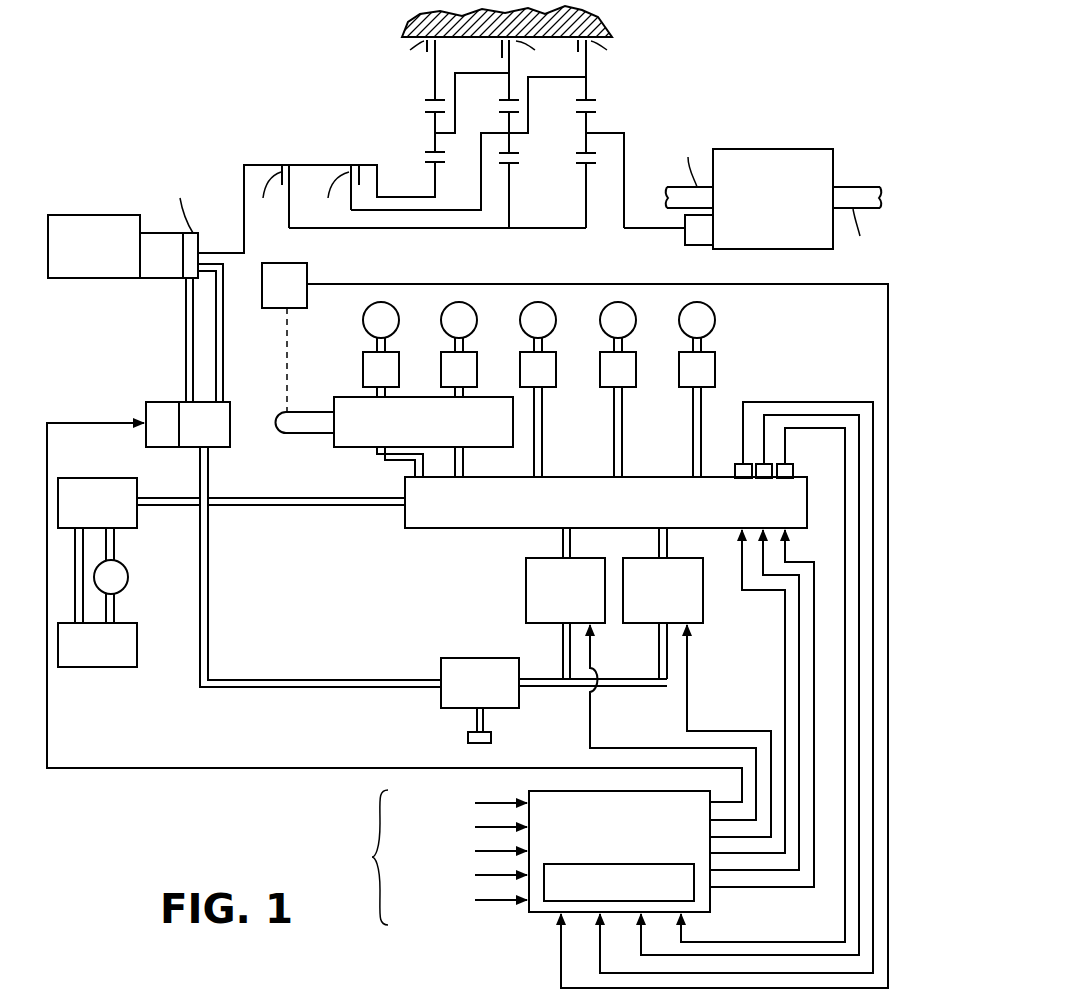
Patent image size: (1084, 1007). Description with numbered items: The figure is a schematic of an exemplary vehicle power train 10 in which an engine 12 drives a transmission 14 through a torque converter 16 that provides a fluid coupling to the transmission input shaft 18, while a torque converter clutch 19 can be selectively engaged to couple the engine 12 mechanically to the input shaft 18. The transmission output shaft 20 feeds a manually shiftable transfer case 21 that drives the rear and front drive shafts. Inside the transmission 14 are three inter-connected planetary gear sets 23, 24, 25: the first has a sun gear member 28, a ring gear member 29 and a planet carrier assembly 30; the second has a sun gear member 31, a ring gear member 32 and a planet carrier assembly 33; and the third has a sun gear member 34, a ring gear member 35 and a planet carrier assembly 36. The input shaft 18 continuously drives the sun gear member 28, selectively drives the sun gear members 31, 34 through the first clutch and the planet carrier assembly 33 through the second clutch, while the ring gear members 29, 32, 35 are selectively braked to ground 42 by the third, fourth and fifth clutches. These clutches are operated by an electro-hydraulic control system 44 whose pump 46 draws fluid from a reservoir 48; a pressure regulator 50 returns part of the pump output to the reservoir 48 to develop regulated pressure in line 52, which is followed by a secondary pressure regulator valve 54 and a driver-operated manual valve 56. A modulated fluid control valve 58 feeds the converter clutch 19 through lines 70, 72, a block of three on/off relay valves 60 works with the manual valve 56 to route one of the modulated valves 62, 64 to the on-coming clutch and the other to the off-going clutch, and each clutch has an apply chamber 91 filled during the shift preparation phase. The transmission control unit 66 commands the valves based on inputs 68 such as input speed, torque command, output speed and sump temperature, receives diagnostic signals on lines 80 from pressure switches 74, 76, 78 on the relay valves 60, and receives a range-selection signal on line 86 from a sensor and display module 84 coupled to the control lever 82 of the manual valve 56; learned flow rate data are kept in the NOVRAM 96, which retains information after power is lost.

The vehicle power train 10 is at (231, 62).
The engine 12 is at (93, 265).
The transmission 14 is at (443, 134).
The torque converter 16 is at (145, 274).
The transmission input shaft 18 is at (316, 192).
The torque converter clutch 19 is at (196, 227).
The transmission output shaft 20 is at (668, 245).
The transfer case 21 is at (774, 180).
The planetary gear set 23 is at (459, 170).
The planetary gear set 24 is at (541, 167).
The planetary gear set 25 is at (623, 107).
The sun gear member 28 is at (418, 159).
The ring gear member 29 is at (413, 111).
The planet carrier assembly 30 is at (472, 103).
The sun gear member 31 is at (531, 190).
The ring gear member 32 is at (492, 115).
The planet carrier assembly 33 is at (547, 119).
The sun gear member 34 is at (597, 190).
The ring gear member 35 is at (607, 111).
The planet carrier assembly 36 is at (627, 180).
The ground 42 is at (529, 20).
The electro-hydraulic control system 44 is at (634, 627).
The pump 46 is at (123, 575).
The reservoir 48 is at (118, 634).
The pressure regulator 50 is at (97, 486).
The line 52 is at (271, 536).
The secondary pressure regulator valve 54 is at (433, 595).
The manual valve 56 is at (413, 443).
The solenoid-operated fluid control valve 58 is at (203, 439).
The relay valves 60 is at (606, 535).
The modulated valve 62 is at (532, 603).
The modulated valve 64 is at (698, 603).
The transmission control unit 66 is at (430, 703).
The inputs 68 is at (433, 857).
The line 70 is at (155, 340).
The line 72 is at (236, 333).
The pressure switch 74 is at (736, 687).
The pressure switch 76 is at (750, 675).
The pressure switch 78 is at (763, 685).
The lines 80 is at (805, 397).
The control lever 82 is at (301, 444).
The sensor and display module 84 is at (317, 331).
The line 86 is at (751, 269).
The apply chamber 91 is at (525, 389).
The NOVRAM 96 is at (650, 899).